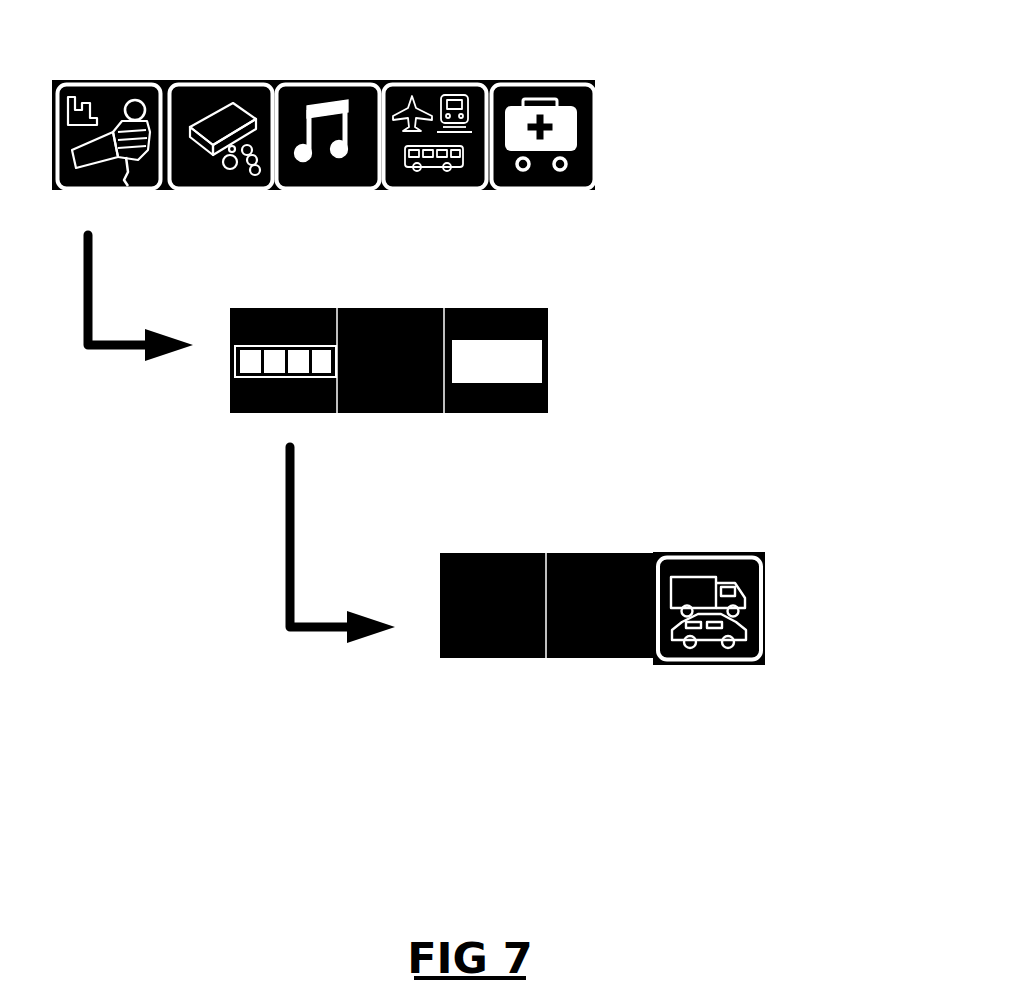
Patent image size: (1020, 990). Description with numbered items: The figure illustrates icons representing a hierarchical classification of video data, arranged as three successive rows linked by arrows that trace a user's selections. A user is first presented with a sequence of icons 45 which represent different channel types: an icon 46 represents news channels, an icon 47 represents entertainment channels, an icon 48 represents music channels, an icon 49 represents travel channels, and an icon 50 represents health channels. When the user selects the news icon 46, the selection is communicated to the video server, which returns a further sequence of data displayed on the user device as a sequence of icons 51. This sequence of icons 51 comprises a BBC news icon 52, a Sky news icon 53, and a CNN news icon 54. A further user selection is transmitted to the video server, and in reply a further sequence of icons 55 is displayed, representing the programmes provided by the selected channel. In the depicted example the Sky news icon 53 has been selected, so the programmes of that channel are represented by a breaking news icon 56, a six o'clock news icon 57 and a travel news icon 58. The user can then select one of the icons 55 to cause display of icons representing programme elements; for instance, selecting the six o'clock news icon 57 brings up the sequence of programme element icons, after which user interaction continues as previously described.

The sequence of icons 45 is at (640, 125).
The news icon 46 is at (122, 80).
The entertainment icon 47 is at (227, 80).
The music icon 48 is at (335, 80).
The travel icon 49 is at (442, 80).
The health icon 50 is at (582, 80).
The sequence of icons 51 is at (608, 356).
The BBC news icon 52 is at (278, 309).
The Sky news icon 53 is at (385, 308).
The CNN news icon 54 is at (490, 308).
The sequence of icons 55 is at (818, 598).
The breaking news icon 56 is at (488, 553).
The six o'clock news icon 57 is at (592, 553).
The travel news icon 58 is at (698, 552).